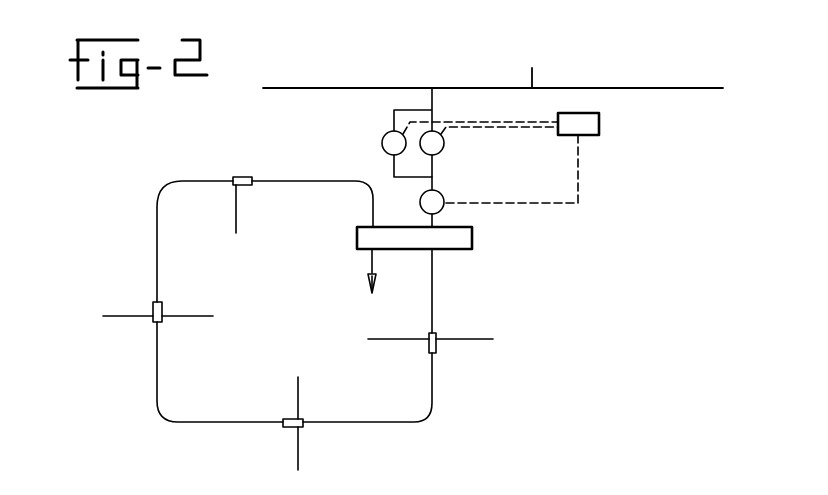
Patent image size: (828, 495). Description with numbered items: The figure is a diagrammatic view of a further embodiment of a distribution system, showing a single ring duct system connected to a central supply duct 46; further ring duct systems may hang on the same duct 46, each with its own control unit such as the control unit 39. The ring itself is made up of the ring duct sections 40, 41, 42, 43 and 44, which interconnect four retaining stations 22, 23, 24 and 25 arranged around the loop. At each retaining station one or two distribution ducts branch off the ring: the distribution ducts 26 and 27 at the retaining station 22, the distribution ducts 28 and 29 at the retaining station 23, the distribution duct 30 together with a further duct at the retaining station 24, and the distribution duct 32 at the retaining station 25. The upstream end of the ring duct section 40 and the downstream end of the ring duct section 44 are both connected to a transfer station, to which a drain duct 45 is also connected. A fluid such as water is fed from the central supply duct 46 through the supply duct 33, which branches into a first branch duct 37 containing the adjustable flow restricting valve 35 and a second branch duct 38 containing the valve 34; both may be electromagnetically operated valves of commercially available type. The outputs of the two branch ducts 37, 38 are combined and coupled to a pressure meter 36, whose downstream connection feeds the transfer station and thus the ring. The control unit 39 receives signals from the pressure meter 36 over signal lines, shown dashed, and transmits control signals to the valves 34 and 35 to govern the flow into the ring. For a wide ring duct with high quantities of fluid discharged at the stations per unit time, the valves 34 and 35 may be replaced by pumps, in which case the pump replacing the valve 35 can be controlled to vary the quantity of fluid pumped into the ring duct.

The retaining station 22 is at (437, 333).
The retaining station 23 is at (292, 427).
The retaining station 24 is at (162, 310).
The retaining station 25 is at (243, 177).
The distribution duct 26 is at (382, 338).
The distribution duct 27 is at (481, 337).
The distribution duct 28 is at (300, 394).
The distribution duct 29 is at (298, 455).
The distribution duct 30 is at (113, 315).
The distribution duct 32 is at (237, 226).
The supply duct 33 is at (434, 98).
The valve 34 is at (385, 135).
The adjustable flow restricting valve 35 is at (443, 148).
The pressure meter 36 is at (441, 197).
The first branch duct 37 is at (437, 168).
The second branch duct 38 is at (389, 165).
The control unit 39 is at (599, 128).
The ring duct section 40 is at (433, 285).
The ring duct section 41 is at (428, 413).
The ring duct section 42 is at (166, 417).
The ring duct section 43 is at (165, 186).
The ring duct section 44 is at (333, 181).
The drain duct 45 is at (368, 260).
The central supply duct 46 is at (304, 88).